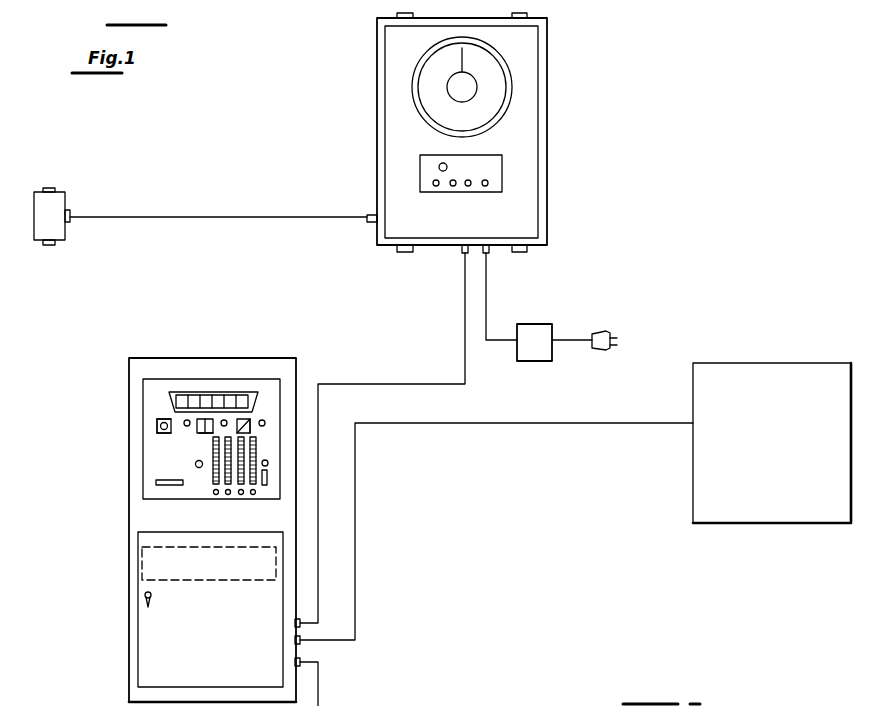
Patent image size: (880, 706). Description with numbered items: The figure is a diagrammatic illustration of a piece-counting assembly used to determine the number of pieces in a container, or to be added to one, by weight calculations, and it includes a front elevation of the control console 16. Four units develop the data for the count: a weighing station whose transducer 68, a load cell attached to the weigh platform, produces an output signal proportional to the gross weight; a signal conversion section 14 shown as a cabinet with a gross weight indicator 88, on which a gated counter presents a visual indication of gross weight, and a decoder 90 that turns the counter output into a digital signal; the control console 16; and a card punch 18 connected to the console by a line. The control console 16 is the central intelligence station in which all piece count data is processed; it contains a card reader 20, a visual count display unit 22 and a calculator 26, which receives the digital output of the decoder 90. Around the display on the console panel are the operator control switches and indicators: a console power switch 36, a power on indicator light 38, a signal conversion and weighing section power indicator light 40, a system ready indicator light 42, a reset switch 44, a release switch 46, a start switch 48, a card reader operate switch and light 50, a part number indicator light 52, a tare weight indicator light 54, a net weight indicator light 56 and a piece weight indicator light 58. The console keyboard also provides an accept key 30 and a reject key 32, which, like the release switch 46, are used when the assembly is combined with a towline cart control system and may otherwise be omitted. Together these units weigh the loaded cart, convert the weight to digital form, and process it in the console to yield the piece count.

The signal conversion section 14 is at (547, 128).
The indicator 88 is at (451, 90).
The decoder 90 is at (435, 186).
The transducer 68 is at (57, 232).
The card punch 18 is at (771, 372).
The control console 16 is at (129, 553).
The calculator 26 is at (213, 567).
The visual count display unit 22 is at (215, 391).
The reset switch 44 is at (185, 421).
The release switch 46 is at (224, 420).
The console power switch 36 is at (157, 427).
The power on indicator light 38 is at (157, 420).
The signal conversion and weighing section power indicator light 40 is at (157, 433).
The system ready indicator light 42 is at (166, 433).
The part number indicator light 52 is at (194, 434).
The tare weight indicator light 54 is at (207, 433).
The card reader operate switch and light 50 is at (198, 468).
The net weight indicator light 56 is at (238, 423).
The piece weight indicator light 58 is at (250, 431).
The start switch 48 is at (266, 423).
The reject key 32 is at (268, 463).
The accept key 30 is at (265, 486).
The card reader 20 is at (156, 483).